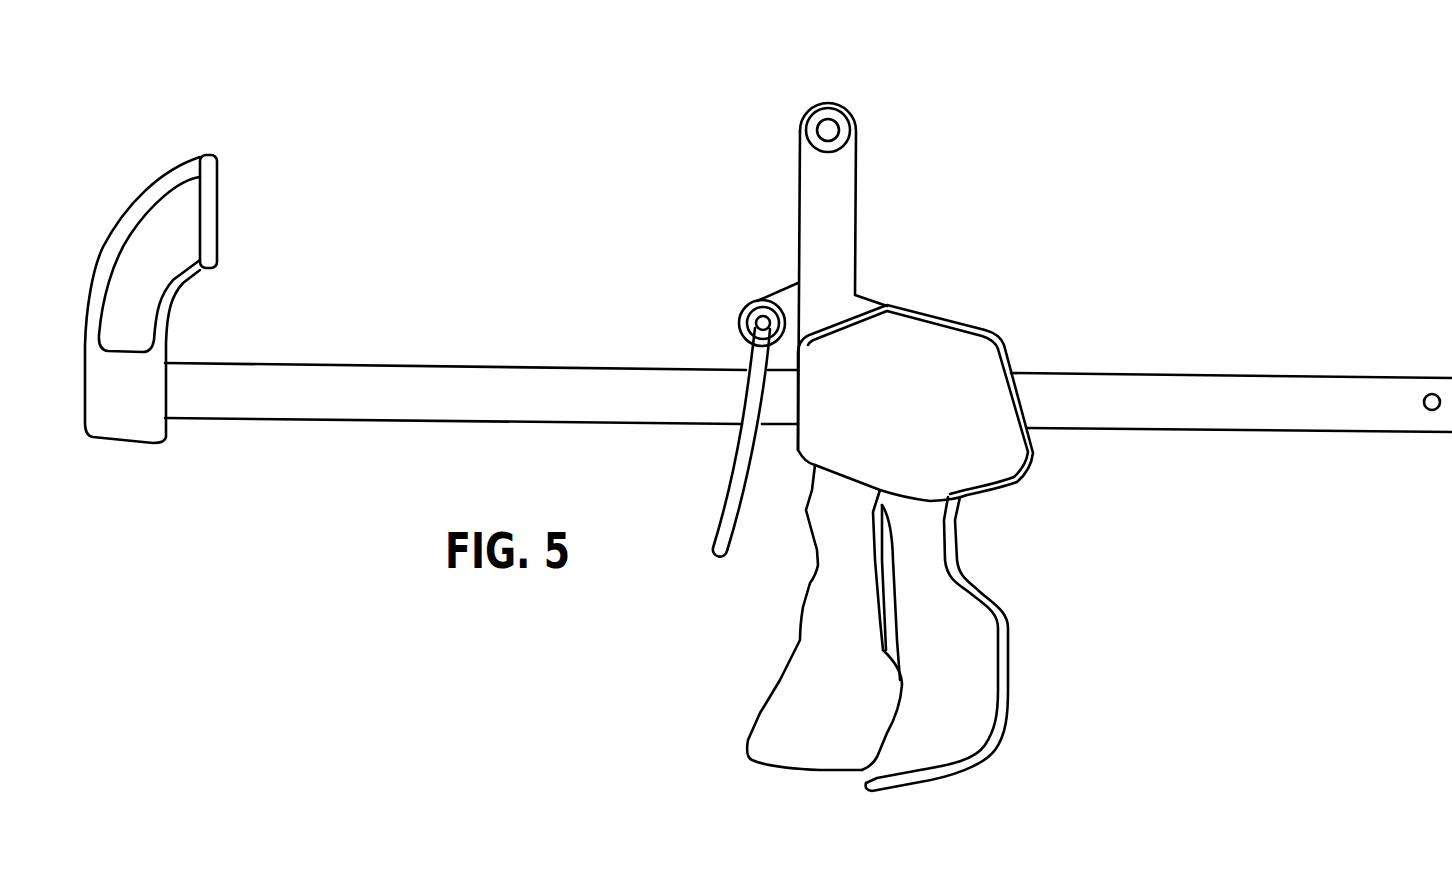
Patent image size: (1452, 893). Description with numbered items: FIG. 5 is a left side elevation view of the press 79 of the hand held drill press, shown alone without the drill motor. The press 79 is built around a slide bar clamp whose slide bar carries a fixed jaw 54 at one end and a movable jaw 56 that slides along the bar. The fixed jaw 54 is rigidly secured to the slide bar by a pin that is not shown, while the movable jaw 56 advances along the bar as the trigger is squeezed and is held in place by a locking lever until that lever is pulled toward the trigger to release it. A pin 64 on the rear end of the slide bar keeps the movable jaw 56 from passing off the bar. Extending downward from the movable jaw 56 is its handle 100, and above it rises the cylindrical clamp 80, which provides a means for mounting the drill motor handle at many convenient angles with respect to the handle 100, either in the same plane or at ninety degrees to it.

The fixed jaw 54 is at (207, 152).
The movable jaw 56 is at (993, 465).
The pin 64 is at (1426, 395).
The press 79 is at (1338, 585).
The cylindrical clamp 80 is at (823, 105).
The handle 100 is at (1010, 683).